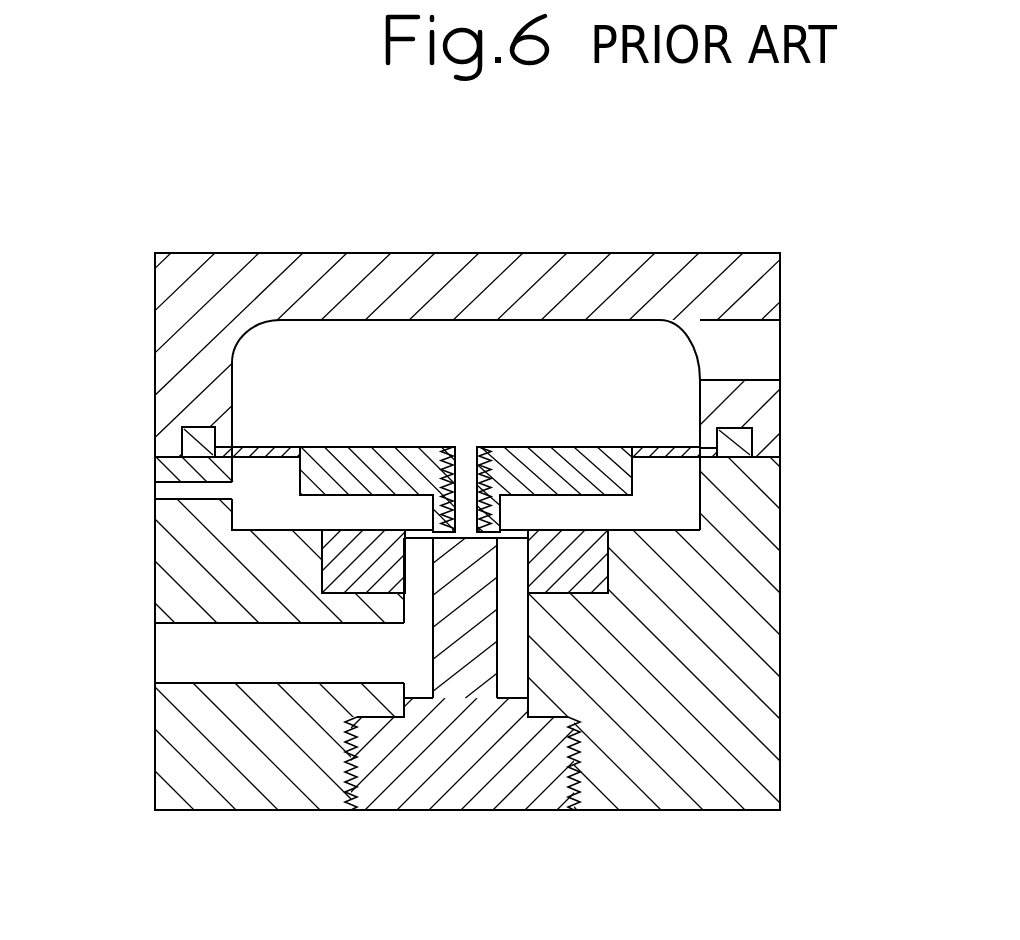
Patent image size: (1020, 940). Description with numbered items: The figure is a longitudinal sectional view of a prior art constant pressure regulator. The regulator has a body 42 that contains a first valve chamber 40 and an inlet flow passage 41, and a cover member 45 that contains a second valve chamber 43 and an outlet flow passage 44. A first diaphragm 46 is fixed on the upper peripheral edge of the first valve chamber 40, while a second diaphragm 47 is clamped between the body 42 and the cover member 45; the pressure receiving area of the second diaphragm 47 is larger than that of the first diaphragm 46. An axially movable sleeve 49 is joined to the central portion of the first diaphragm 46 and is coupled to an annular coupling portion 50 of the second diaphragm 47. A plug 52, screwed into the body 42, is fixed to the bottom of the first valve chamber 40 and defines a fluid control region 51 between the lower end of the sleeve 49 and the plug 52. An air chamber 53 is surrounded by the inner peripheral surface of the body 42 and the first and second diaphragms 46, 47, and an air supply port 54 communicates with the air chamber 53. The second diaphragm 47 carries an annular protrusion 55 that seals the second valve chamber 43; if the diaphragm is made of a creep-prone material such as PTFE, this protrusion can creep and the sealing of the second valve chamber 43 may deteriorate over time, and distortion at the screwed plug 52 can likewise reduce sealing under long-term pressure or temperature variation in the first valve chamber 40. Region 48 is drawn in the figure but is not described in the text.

The first valve chamber 40 is at (420, 652).
The inlet flow passage 41 is at (232, 658).
The body 42 is at (620, 668).
The second valve chamber 43 is at (528, 380).
The outlet flow passage 44 is at (738, 352).
The cover member 45 is at (469, 288).
The first diaphragm 46 is at (503, 510).
The second diaphragm 47 is at (670, 455).
The valve seat 48 is at (345, 560).
The sleeve 49 is at (465, 487).
The annular coupling portion 50 is at (404, 467).
The fluid control region 51 is at (325, 582).
The plug 52 is at (472, 630).
The air chamber 53 is at (260, 483).
The air supply port 54 is at (172, 492).
The annular protrusion 55 is at (736, 443).